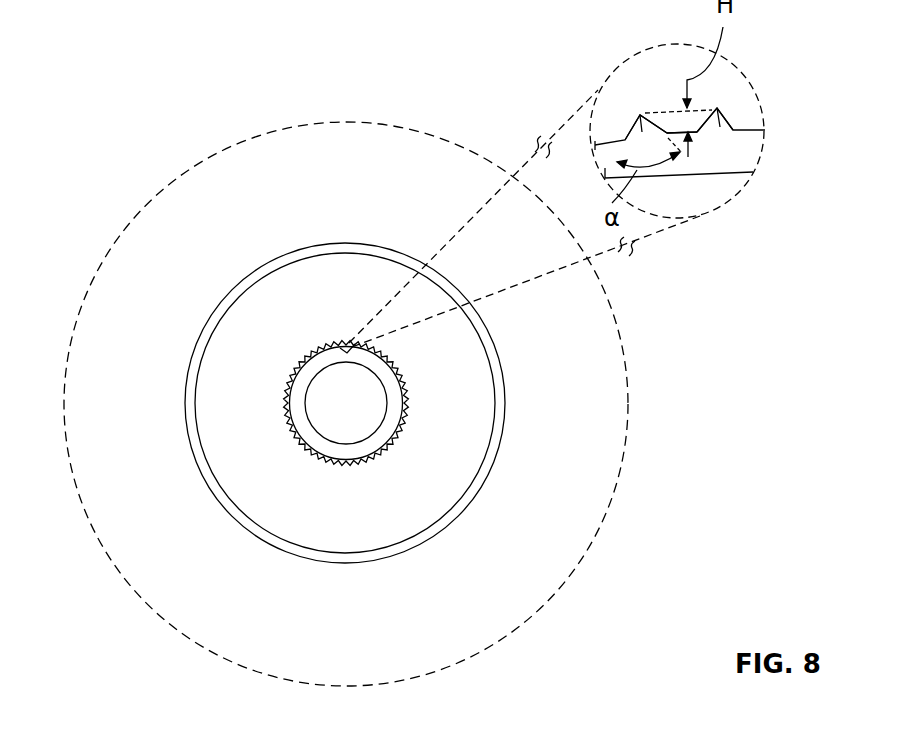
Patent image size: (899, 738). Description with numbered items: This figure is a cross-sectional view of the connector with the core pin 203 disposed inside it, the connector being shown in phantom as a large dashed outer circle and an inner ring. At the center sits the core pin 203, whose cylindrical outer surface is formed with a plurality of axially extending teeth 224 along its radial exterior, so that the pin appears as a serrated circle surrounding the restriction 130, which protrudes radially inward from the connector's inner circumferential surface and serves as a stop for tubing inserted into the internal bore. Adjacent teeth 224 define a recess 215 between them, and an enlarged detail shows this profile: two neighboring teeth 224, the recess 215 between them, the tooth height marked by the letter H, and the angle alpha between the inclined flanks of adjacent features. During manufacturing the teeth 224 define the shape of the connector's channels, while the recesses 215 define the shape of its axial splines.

The core pin 203 is at (295, 365).
The axially extending teeth 224 is at (640, 115).
The recess 215 is at (693, 132).
The restriction 130 is at (377, 443).